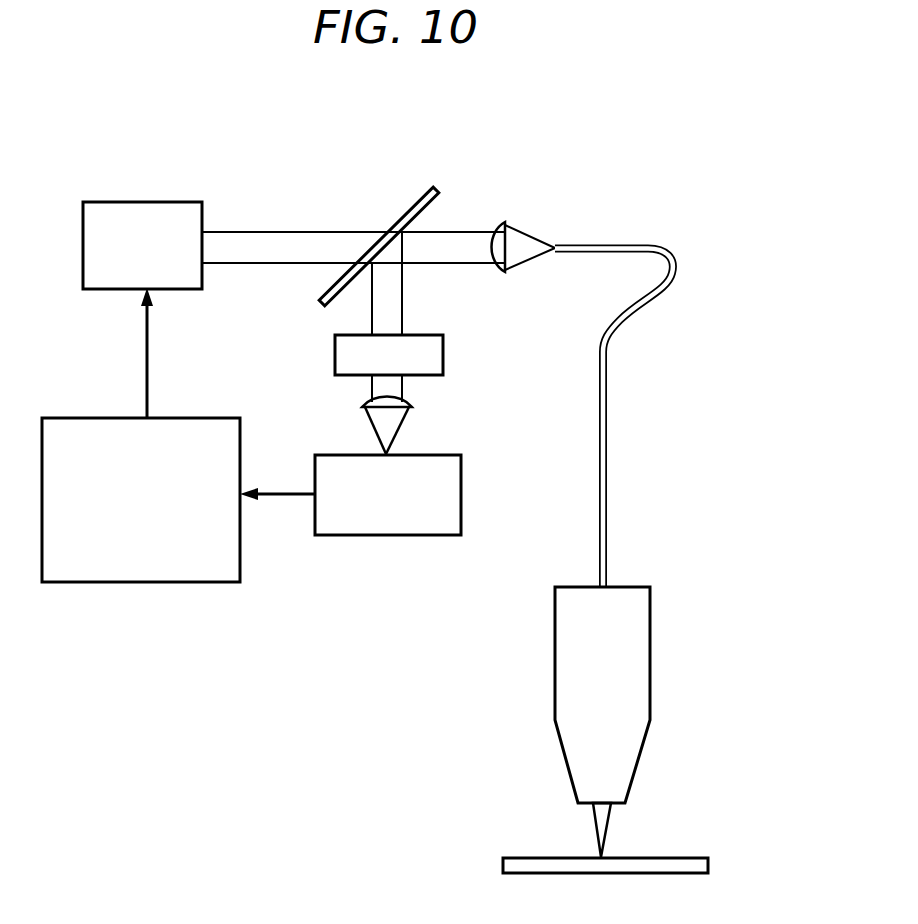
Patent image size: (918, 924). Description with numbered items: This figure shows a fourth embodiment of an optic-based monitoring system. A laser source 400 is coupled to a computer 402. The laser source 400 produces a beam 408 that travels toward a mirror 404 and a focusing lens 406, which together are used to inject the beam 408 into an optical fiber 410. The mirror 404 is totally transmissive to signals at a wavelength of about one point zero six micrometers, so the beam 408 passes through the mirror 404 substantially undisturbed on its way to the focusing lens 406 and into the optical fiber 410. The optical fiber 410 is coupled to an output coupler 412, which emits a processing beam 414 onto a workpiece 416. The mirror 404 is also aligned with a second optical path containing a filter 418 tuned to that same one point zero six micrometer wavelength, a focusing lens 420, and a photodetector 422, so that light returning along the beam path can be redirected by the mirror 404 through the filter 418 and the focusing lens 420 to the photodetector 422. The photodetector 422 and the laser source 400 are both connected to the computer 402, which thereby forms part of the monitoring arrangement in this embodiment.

The laser source 400 is at (152, 200).
The computer 402 is at (158, 585).
The mirror 404 is at (440, 186).
The focusing lens 406 is at (503, 222).
The beam 408 is at (265, 230).
The optical fiber 410 is at (607, 352).
The output coupler 412 is at (651, 640).
The processing beam 414 is at (604, 836).
The workpiece 416 is at (709, 876).
The filter 418 is at (444, 358).
The focusing lens 420 is at (413, 405).
The photodetector 422 is at (398, 538).